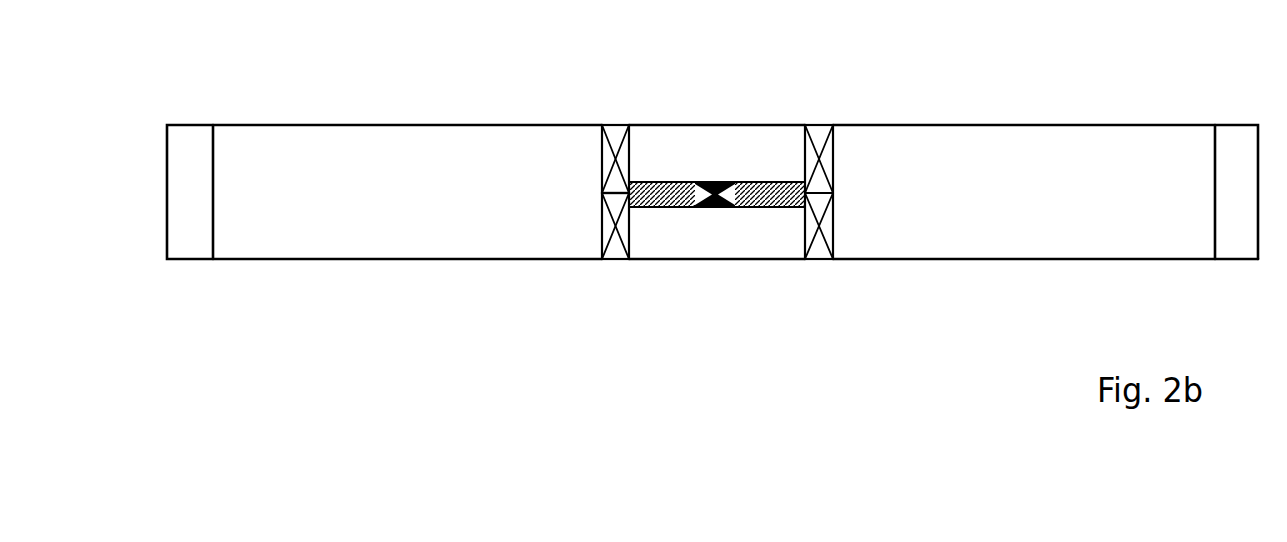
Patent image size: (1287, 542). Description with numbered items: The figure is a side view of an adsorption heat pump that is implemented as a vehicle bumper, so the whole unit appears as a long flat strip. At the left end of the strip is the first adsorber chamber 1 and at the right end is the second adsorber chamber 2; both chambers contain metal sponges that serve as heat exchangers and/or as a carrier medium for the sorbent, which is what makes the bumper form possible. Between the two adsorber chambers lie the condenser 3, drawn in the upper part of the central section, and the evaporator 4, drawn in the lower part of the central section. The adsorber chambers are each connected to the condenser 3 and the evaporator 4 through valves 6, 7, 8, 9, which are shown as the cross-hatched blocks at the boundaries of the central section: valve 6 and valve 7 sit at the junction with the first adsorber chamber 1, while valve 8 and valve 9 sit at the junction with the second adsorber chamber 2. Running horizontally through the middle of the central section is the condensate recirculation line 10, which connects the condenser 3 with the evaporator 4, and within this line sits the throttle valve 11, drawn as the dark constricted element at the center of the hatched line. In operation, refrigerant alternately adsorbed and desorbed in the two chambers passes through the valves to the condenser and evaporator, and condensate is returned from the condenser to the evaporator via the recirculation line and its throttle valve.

The first adsorber chamber 1 is at (384, 192).
The second adsorber chamber 2 is at (1045, 192).
The condenser 3 is at (717, 152).
The evaporator 4 is at (717, 236).
The valve 6 is at (610, 118).
The valve 7 is at (607, 266).
The valve 8 is at (825, 116).
The valve 9 is at (886, 261).
The condensate recirculation line 10 is at (760, 205).
The throttle valve 11 is at (713, 207).